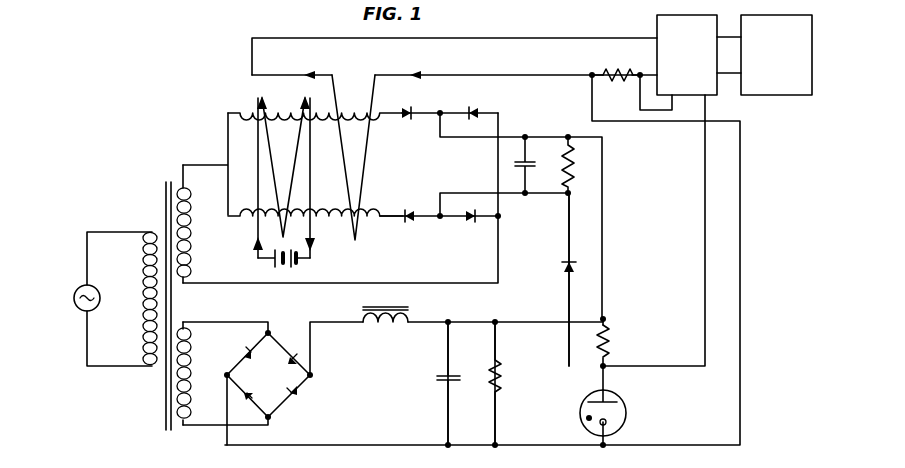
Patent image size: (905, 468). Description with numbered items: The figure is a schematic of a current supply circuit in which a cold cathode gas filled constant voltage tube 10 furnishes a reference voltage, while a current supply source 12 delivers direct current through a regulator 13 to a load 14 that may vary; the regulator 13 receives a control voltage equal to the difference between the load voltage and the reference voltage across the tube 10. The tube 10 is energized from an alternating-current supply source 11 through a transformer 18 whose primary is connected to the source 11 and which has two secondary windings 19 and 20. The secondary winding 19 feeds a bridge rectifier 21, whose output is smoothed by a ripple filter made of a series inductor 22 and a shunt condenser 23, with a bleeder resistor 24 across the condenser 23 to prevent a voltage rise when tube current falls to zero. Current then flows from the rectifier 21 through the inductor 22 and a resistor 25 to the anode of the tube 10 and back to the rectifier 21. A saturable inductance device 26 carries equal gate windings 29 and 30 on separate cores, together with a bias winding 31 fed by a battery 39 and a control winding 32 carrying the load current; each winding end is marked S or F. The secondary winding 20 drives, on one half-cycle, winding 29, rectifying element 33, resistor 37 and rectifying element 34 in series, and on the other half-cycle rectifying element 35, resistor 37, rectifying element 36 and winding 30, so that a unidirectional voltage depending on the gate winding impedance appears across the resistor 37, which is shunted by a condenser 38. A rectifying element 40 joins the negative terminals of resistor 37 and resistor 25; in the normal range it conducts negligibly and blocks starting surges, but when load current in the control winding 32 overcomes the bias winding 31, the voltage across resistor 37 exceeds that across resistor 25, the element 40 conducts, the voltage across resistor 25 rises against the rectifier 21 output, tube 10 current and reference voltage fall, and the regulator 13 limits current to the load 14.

The constant voltage tube 10 is at (580, 412).
The alternating-current supply source 11 is at (80, 307).
The current supply source 12 is at (783, 96).
The regulator 13 is at (657, 19).
The load 14 is at (614, 71).
The transformer 18 is at (166, 176).
The secondary winding 19 is at (191, 366).
The secondary winding 20 is at (192, 257).
The bridge rectifier 21 is at (269, 375).
The series inductor 22 is at (392, 330).
The shunt condenser 23 is at (437, 377).
The bleeder resistor 24 is at (503, 384).
The resistor 25 is at (611, 333).
The saturable inductance device 26 is at (318, 170).
The gate winding 29 is at (248, 128).
The gate winding 30 is at (246, 205).
The bias winding 31 is at (311, 178).
The control winding 32 is at (369, 167).
The rectifying element 33 is at (407, 106).
The rectifying element 34 is at (473, 224).
The rectifying element 35 is at (472, 107).
The rectifying element 36 is at (410, 224).
The resistor 37 is at (573, 168).
The condenser 38 is at (536, 166).
The battery 39 is at (289, 266).
The rectifying element 40 is at (561, 268).